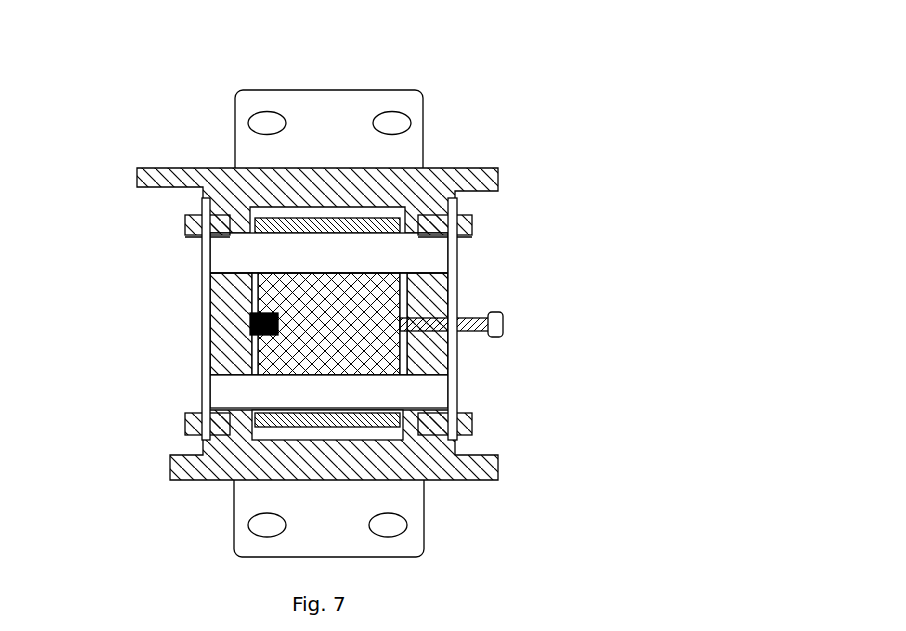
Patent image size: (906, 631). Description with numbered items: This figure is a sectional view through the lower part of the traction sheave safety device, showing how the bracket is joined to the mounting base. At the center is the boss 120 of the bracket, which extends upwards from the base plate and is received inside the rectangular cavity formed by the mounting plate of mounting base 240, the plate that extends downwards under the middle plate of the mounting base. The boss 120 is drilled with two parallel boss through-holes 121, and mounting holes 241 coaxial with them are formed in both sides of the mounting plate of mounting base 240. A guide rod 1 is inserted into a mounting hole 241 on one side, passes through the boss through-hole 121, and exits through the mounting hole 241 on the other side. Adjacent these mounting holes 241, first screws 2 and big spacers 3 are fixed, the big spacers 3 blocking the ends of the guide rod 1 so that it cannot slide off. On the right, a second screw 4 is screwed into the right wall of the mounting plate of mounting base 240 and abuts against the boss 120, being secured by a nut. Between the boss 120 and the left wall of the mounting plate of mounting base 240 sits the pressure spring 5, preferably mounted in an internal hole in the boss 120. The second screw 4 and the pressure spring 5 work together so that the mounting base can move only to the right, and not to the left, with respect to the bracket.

The guide rod 1 is at (327, 260).
The boss 120 is at (403, 387).
The boss through-hole 121 is at (400, 228).
The first screw 2 is at (190, 217).
The big spacer 3 is at (195, 237).
The mounting plate of mounting base 240 is at (232, 222).
The mounting hole 241 is at (204, 247).
The second screw 4 is at (458, 333).
The pressure spring 5 is at (210, 350).